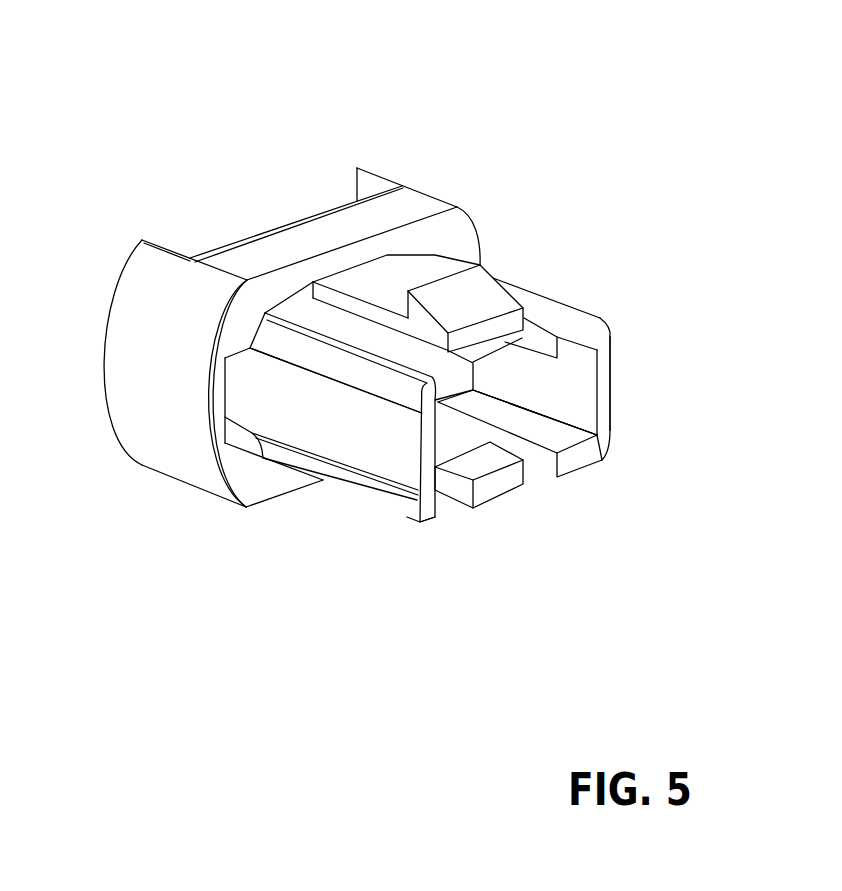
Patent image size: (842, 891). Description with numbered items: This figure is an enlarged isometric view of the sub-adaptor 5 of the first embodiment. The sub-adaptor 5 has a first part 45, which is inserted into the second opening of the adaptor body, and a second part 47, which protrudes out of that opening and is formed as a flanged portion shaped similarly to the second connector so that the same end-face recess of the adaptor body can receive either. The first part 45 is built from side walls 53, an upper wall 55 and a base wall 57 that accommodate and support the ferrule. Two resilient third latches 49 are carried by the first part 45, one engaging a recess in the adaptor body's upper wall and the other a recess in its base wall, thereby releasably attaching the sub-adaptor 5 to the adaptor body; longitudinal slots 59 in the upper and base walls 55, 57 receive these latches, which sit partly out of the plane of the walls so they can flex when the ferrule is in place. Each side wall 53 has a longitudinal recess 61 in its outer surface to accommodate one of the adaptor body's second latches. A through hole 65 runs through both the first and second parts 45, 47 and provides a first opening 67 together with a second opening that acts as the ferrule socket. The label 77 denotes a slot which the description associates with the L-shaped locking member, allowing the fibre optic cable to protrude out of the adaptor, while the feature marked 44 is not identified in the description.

The sub-adaptor 5 is at (163, 112).
The housing body 44 is at (257, 480).
The first part 45 is at (535, 281).
The second part 47 is at (152, 456).
The resilient third latch 49 is at (478, 297).
The side wall 53 is at (603, 378).
The upper wall 55 is at (580, 320).
The base wall 57 is at (577, 458).
The longitudinal slot 59 is at (540, 347).
The longitudinal recess 61 is at (613, 397).
The through hole 65 is at (570, 423).
The first opening 67 is at (583, 428).
The slot 77 is at (343, 182).